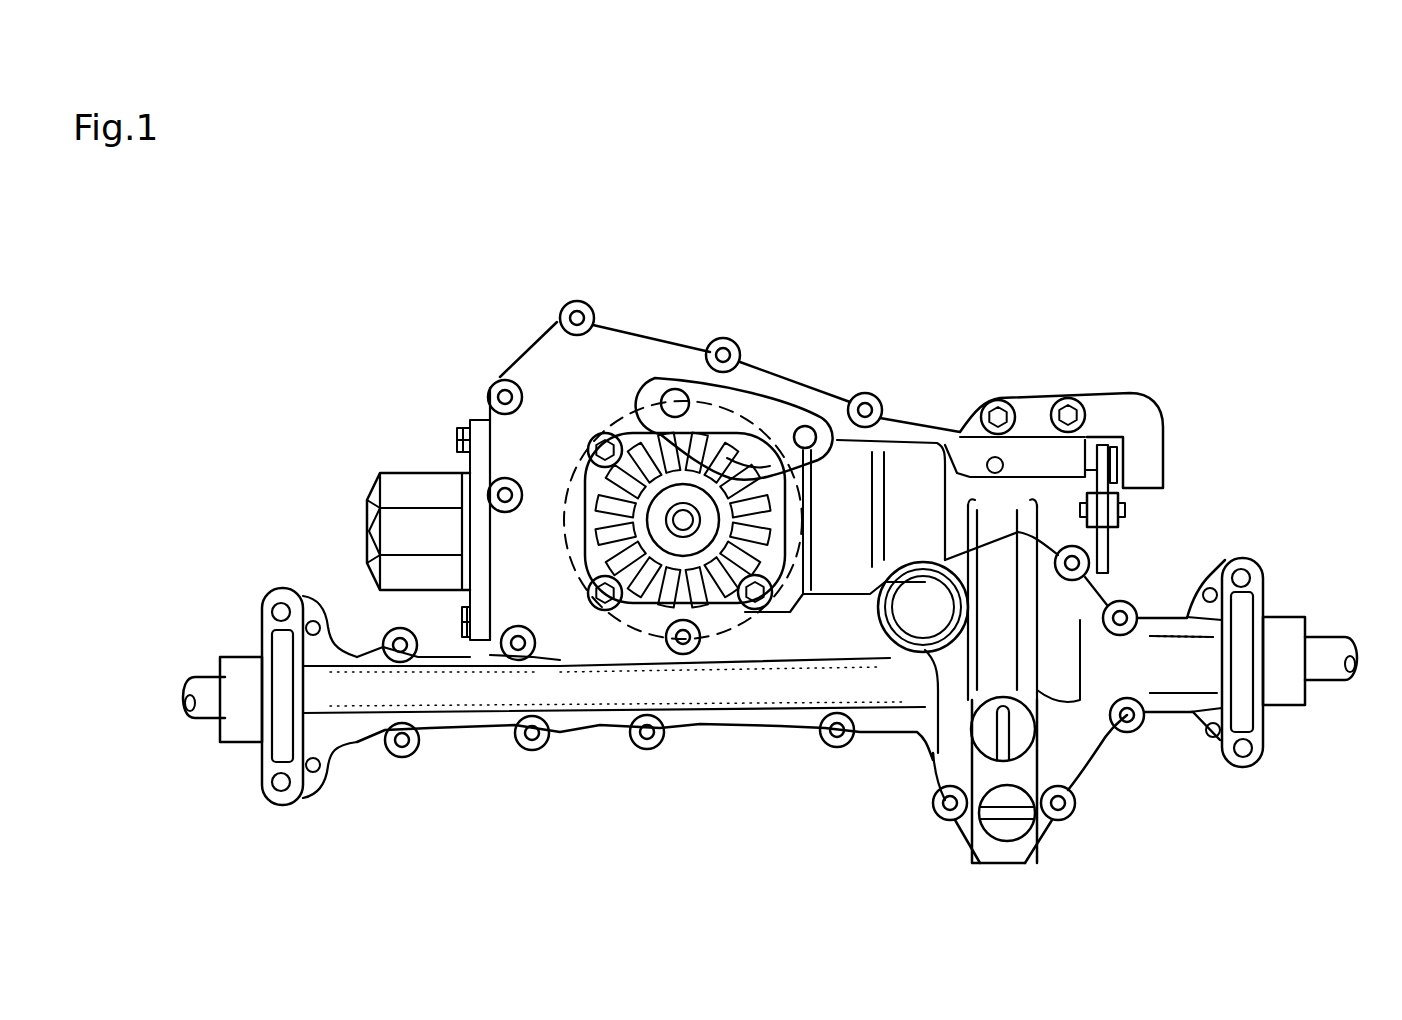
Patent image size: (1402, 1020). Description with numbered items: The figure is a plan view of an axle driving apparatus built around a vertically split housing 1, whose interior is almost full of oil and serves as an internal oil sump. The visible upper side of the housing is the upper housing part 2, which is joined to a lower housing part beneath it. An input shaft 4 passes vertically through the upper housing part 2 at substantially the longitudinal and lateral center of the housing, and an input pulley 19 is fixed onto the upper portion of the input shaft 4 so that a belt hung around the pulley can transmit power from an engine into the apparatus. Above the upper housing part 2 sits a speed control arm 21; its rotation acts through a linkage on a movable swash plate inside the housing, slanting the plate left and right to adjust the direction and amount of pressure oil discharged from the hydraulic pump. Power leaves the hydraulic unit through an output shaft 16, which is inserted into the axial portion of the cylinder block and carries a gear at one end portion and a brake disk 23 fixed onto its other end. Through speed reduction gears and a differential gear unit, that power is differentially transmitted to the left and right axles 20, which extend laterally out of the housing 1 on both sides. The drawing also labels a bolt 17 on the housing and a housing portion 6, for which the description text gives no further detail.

The housing 1 is at (530, 335).
The upper housing part 2 is at (633, 360).
The input shaft 4 is at (690, 512).
The lower housing portion 6 is at (1093, 760).
The output shaft 16 is at (1120, 513).
The bolt 17 is at (393, 480).
The input pulley 19 is at (735, 633).
The axles 20 is at (202, 683).
The speed control arm 21 is at (787, 440).
The brake disk 23 is at (1110, 553).